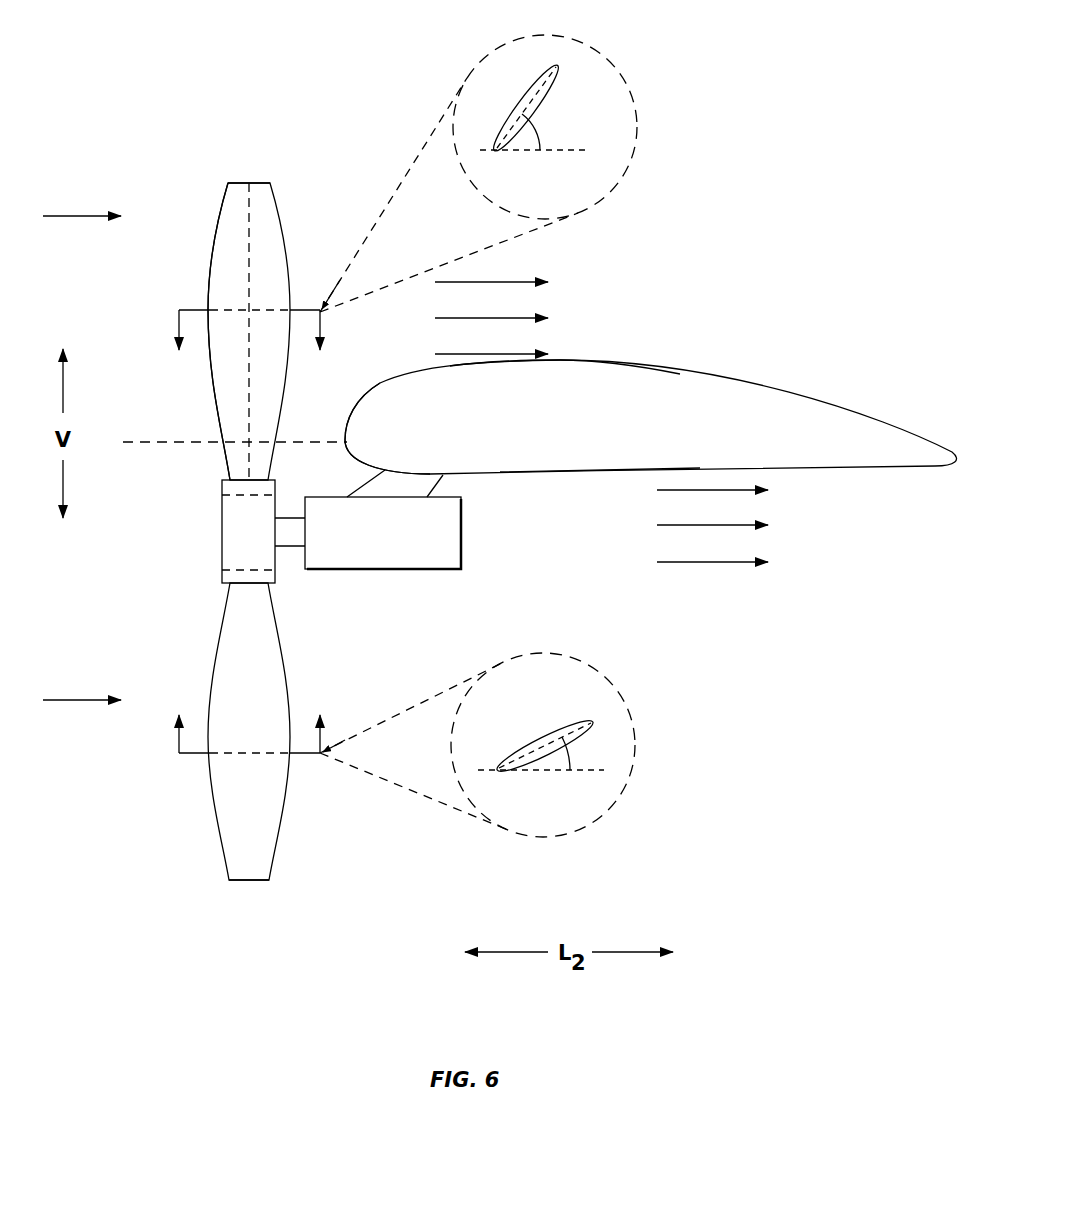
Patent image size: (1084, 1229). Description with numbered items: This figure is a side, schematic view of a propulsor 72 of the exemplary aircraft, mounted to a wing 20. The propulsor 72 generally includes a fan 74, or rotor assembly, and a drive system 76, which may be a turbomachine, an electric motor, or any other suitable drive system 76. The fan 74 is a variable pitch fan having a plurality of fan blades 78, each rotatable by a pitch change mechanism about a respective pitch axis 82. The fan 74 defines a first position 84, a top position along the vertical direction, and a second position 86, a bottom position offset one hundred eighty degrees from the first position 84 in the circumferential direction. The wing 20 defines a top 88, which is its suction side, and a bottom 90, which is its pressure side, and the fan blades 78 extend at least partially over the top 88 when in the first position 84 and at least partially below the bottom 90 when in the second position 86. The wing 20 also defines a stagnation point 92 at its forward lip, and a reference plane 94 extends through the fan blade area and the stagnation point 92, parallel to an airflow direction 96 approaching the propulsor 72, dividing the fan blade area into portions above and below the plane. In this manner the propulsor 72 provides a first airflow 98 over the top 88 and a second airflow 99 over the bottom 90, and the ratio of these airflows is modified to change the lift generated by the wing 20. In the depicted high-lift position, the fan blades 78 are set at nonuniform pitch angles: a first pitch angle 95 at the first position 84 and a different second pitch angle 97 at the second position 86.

The wing 20 is at (648, 450).
The propulsor 72 is at (218, 532).
The fan 74 is at (218, 282).
The drive system 76 is at (370, 547).
The fan blades 78 is at (210, 282).
The pitch axis 82 is at (251, 245).
The first position 84 is at (237, 170).
The second position 86 is at (242, 918).
The top of the wing 88 is at (567, 357).
The bottom of the wing 90 is at (599, 485).
The stagnation point 92 is at (344, 437).
The reference plane 94 is at (178, 444).
The first pitch angle 95 is at (540, 133).
The airflow direction 96 is at (85, 216).
The second pitch angle 97 is at (572, 758).
The first airflow 98 is at (518, 282).
The second airflow 99 is at (707, 564).